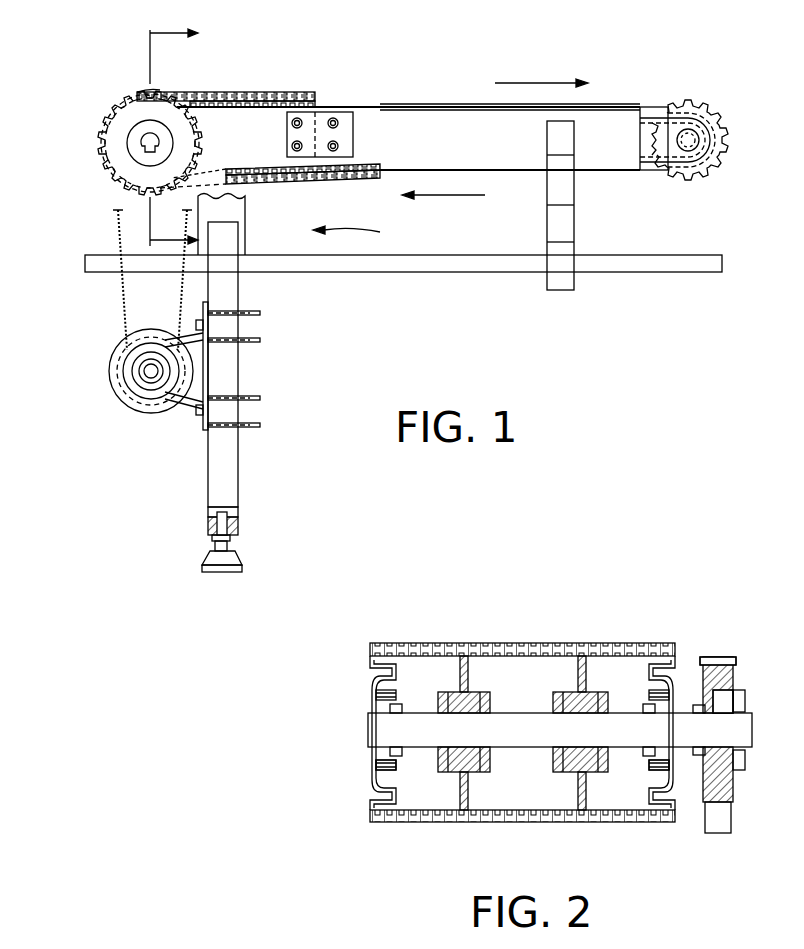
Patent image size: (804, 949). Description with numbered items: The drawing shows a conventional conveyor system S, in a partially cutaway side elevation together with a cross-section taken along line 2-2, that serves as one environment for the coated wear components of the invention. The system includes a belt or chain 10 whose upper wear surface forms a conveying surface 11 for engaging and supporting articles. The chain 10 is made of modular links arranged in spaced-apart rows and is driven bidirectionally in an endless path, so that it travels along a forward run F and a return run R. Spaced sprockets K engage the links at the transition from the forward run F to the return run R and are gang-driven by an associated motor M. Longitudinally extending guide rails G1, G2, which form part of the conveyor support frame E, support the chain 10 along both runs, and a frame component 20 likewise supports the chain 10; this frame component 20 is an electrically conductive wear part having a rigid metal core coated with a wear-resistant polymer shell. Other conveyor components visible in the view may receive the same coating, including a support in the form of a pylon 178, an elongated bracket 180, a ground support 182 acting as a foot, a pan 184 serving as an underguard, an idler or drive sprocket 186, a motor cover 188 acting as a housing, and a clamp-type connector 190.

In FIG. 1, the chain 10 is at (262, 90).
In FIG. 2, the chain 10 is at (612, 643).
In FIG. 1, the conveying surface 11 is at (206, 68).
In FIG. 2, the conveying surface 11 is at (456, 598).
In FIG. 1, the frame component 20 is at (603, 128).
In FIG. 1, the pylon 178 is at (230, 467).
In FIG. 1, the elongated bracket 180 is at (565, 218).
In FIG. 1, the ground support 182 is at (202, 566).
In FIG. 1, the pan 184 is at (636, 272).
In FIG. 1, the drive sprocket 186 is at (110, 175).
In FIG. 1, the motor cover 188 is at (118, 392).
In FIG. 1, the connector 190 is at (355, 110).
In FIG. 1, the sprockets K is at (186, 138).
In FIG. 2, the sprockets K is at (578, 678).
In FIG. 1, the motor M is at (152, 413).
In FIG. 1, the forward run F is at (535, 83).
In FIG. 1, the return run R is at (452, 197).
In FIG. 1, the conveyor support frame E is at (358, 190).
In FIG. 1, the conveyor system S is at (632, 82).
In FIG. 2, the guide rail G1 is at (370, 769).
In FIG. 2, the guide rail G2 is at (676, 790).
In FIG. 1, the section line 2 is at (160, 137).